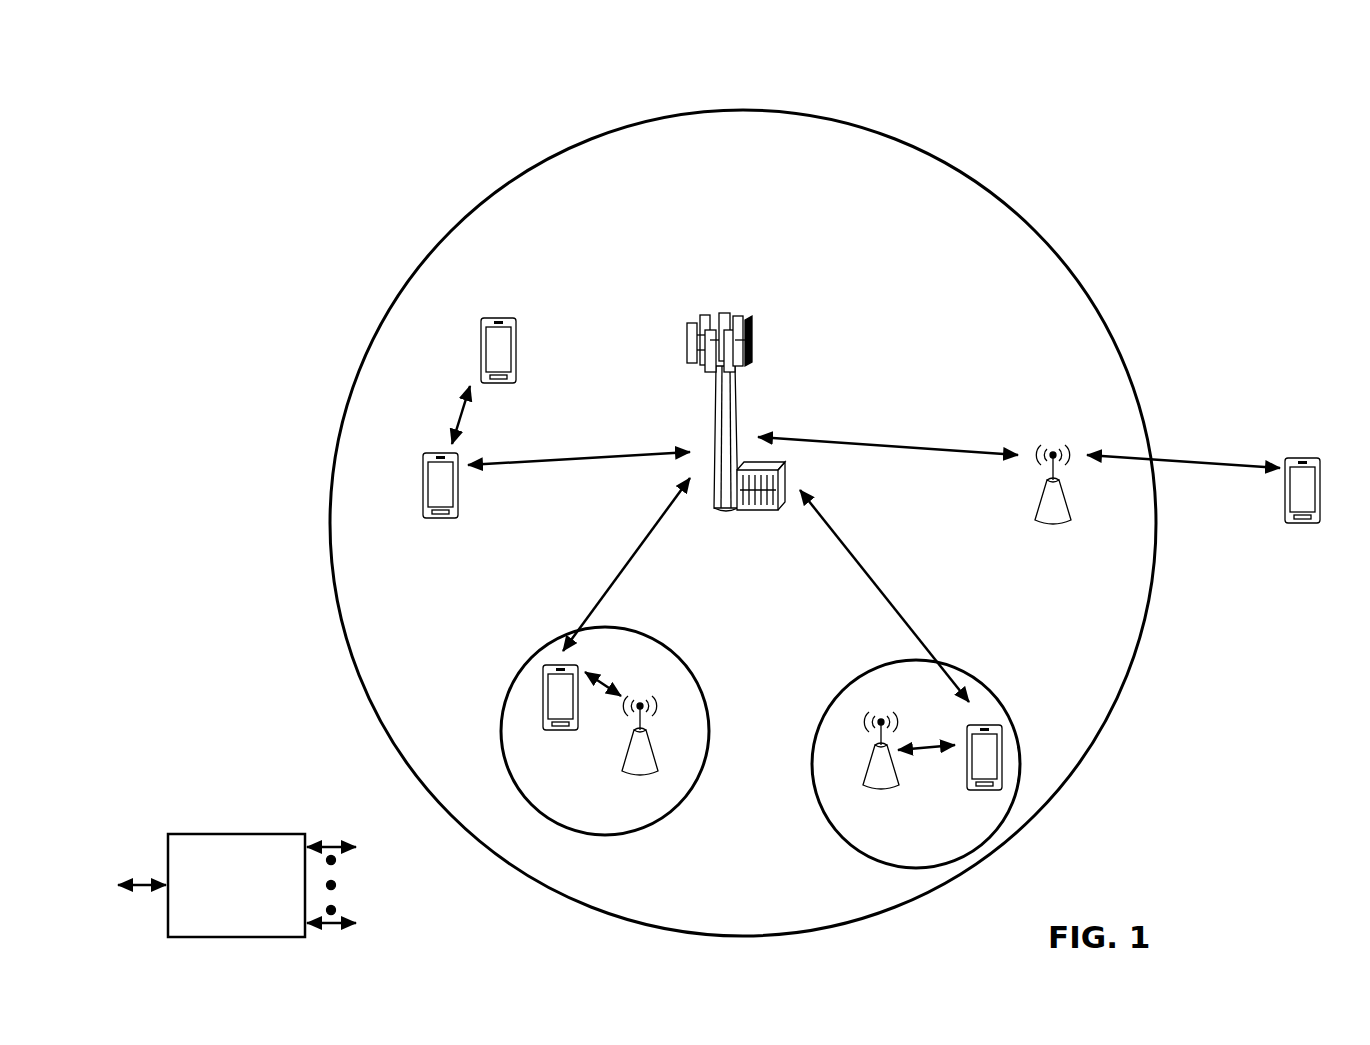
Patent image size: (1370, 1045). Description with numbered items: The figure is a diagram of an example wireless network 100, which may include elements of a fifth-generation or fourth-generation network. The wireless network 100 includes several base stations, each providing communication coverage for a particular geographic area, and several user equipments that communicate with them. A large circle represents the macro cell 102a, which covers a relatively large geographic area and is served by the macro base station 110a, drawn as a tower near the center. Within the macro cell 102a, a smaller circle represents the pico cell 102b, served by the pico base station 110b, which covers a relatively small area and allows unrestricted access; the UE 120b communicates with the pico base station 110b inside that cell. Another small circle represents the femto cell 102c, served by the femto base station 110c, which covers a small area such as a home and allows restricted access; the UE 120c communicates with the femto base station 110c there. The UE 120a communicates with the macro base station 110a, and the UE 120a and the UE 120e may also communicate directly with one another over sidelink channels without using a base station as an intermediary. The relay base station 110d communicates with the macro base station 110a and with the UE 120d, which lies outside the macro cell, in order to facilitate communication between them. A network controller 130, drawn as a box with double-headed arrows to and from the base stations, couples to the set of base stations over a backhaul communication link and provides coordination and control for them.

The wireless network 100 is at (196, 53).
The macro cell 102a is at (1018, 213).
The pico cell 102b is at (691, 670).
The femto cell 102c is at (853, 680).
The macro base station 110a is at (727, 306).
The pico base station 110b is at (661, 756).
The femto base station 110c is at (863, 779).
The relay base station 110d is at (1053, 445).
The user equipment 120a is at (423, 478).
The user equipment 120b is at (547, 732).
The user equipment 120c is at (968, 792).
The user equipment 120d is at (1313, 456).
The user equipment 120e is at (480, 336).
The network controller 130 is at (234, 833).